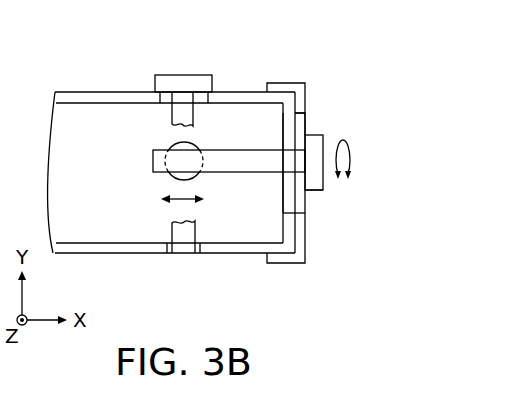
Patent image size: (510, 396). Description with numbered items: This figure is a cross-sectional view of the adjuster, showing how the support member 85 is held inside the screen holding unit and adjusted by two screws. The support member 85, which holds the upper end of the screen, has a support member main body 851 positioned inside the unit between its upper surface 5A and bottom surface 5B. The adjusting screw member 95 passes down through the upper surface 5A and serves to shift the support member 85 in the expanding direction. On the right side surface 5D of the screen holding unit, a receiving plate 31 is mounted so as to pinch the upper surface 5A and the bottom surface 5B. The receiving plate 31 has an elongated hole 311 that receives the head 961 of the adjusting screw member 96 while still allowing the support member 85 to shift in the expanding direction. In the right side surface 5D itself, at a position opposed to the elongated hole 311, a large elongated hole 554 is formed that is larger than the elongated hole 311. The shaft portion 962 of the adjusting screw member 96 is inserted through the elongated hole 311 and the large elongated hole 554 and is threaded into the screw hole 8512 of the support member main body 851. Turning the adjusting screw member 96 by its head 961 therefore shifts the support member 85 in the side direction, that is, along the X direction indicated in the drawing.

The upper surface 5A is at (112, 92).
The bottom surface 5B is at (106, 255).
The right side surface 5D is at (305, 227).
The receiving plate 31 is at (290, 83).
The elongated hole 311 is at (310, 125).
The large elongated hole 554 is at (273, 137).
The support member 85 is at (144, 146).
The support member main body 851 is at (176, 145).
The screw hole 8512 is at (178, 178).
The adjusting screw member 95 is at (181, 62).
The adjusting screw member 96 is at (331, 130).
The head 961 is at (315, 190).
The shaft portion 962 is at (238, 175).